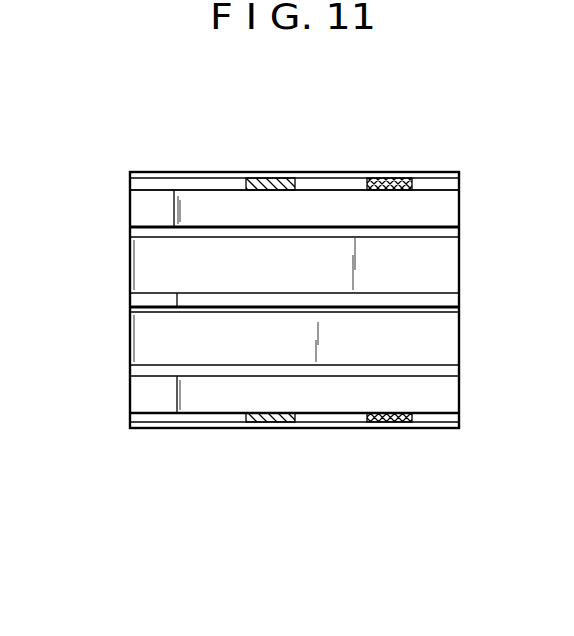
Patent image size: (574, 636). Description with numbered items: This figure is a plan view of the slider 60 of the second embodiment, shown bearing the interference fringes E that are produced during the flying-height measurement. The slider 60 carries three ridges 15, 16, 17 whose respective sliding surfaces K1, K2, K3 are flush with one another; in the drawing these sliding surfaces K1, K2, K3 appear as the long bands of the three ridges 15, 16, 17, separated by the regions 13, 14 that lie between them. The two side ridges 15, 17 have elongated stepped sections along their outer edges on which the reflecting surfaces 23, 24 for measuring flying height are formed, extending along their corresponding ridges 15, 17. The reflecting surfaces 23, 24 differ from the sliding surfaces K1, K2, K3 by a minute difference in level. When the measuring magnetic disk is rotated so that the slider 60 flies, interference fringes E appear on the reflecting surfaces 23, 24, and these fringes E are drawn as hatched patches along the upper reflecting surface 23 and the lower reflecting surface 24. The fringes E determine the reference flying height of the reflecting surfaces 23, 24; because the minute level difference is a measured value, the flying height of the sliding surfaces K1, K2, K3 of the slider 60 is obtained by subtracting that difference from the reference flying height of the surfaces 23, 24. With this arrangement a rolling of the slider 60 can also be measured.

The slider 60 is at (122, 387).
The reflecting surface 23 is at (433, 180).
The reflecting surface 24 is at (437, 418).
The interference fringes E is at (262, 178).
The ridge 15 is at (450, 205).
The ridge 16 is at (445, 297).
The ridge 17 is at (450, 389).
The elastic plate 13 is at (143, 272).
The elastic plate 14 is at (143, 341).
The sliding surface K1 is at (198, 200).
The sliding surface K2 is at (218, 303).
The sliding surface K3 is at (200, 405).